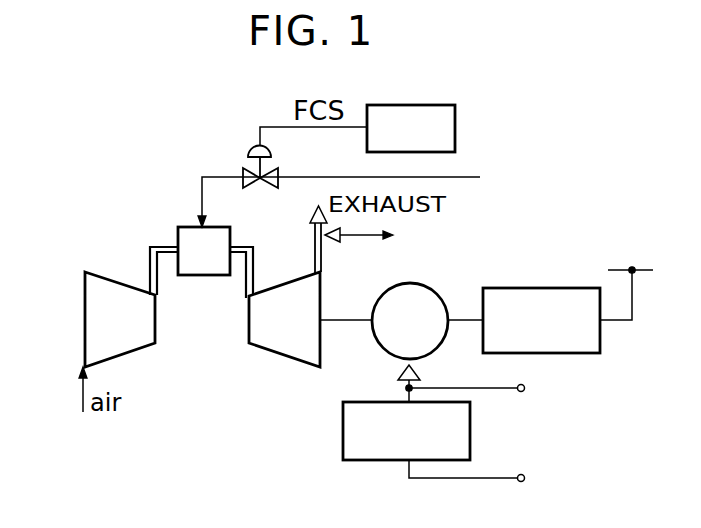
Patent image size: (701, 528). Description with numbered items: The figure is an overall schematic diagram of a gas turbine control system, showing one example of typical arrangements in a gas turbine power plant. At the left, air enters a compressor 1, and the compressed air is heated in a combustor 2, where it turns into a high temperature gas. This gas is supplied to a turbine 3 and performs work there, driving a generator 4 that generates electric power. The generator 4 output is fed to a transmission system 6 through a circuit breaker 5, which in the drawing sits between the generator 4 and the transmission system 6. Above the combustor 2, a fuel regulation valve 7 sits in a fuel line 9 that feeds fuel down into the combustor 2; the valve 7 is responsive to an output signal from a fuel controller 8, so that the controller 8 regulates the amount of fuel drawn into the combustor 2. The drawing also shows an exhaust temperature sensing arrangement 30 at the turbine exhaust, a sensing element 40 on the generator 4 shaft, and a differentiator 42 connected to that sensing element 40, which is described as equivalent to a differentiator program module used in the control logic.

The compressor 1 is at (85, 292).
The combustor 2 is at (178, 233).
The turbine 3 is at (249, 327).
The generator 4 is at (440, 297).
The circuit breaker 5 is at (563, 288).
The transmission system 6 is at (643, 268).
The fuel regulation valve 7 is at (250, 152).
The fuel controller 8 is at (455, 117).
The fuel line 9 is at (368, 177).
The exhaust temperature sensor 30 is at (330, 244).
The speed sensor 40 is at (401, 378).
The differentiator 42 is at (343, 428).